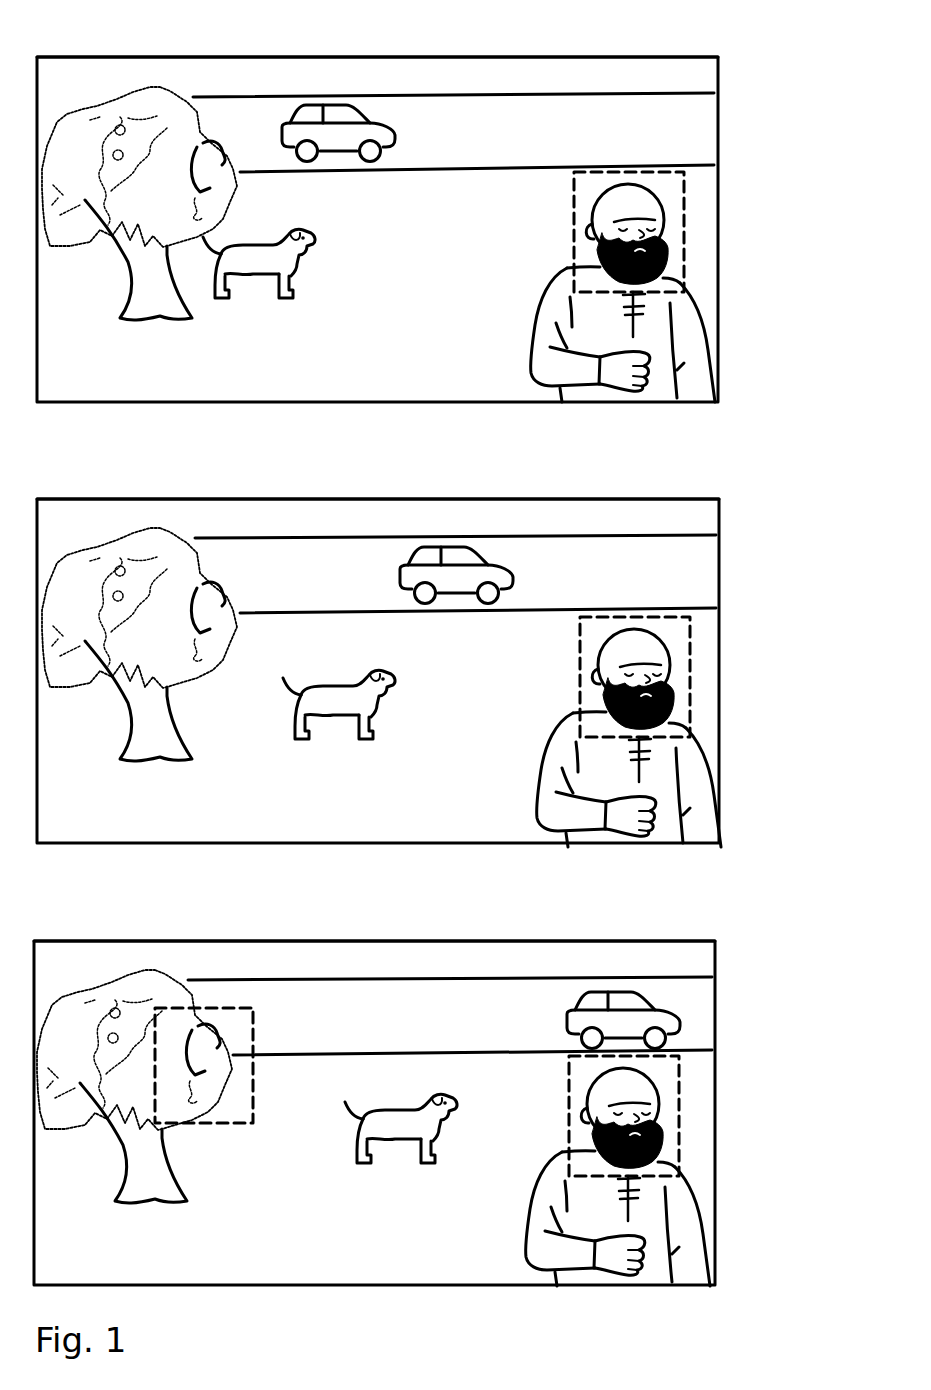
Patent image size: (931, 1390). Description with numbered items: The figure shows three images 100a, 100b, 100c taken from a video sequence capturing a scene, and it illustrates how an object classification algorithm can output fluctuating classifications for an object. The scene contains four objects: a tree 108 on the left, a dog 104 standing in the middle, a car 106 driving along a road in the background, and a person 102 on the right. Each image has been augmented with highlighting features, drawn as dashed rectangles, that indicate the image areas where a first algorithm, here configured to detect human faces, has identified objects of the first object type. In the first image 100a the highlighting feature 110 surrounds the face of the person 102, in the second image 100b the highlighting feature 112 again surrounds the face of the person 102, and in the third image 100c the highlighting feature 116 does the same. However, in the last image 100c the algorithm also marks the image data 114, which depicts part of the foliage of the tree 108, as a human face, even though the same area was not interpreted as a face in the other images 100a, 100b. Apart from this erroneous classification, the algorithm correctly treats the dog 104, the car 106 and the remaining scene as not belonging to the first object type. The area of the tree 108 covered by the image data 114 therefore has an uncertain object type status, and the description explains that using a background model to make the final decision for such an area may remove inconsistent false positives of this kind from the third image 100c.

The first image 100a is at (600, 57).
The second image 100b is at (636, 499).
The third image 100c is at (565, 941).
The person 102 is at (704, 330).
The dog 104 is at (292, 265).
The car 106 is at (397, 136).
The tree 108 is at (162, 88).
The highlighting feature 110 is at (685, 233).
The highlighting feature 112 is at (691, 676).
The image data 114 is at (253, 1088).
The highlighting feature 116 is at (680, 1117).